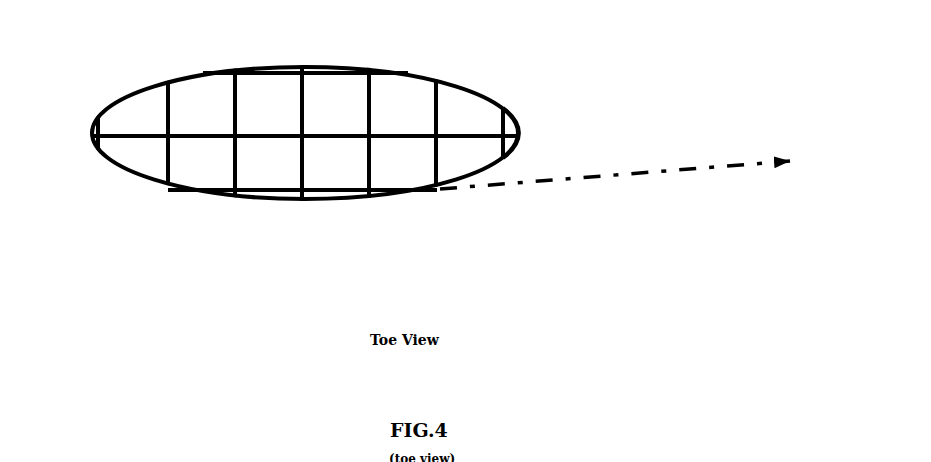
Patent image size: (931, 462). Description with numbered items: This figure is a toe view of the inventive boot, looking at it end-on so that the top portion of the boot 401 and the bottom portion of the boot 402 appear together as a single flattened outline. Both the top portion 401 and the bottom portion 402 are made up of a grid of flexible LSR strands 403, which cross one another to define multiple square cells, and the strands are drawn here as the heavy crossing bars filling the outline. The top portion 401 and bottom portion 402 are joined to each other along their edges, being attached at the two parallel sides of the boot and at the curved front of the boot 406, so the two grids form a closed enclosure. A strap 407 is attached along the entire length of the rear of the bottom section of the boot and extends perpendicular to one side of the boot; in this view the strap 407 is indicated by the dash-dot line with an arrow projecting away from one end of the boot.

The top portion of the boot 401 is at (316, 133).
The bottom portion of the boot 402 is at (522, 141).
The flexible LSR strands 403 is at (376, 98).
The curved front of the boot 406 is at (197, 144).
The strap 407 is at (676, 177).